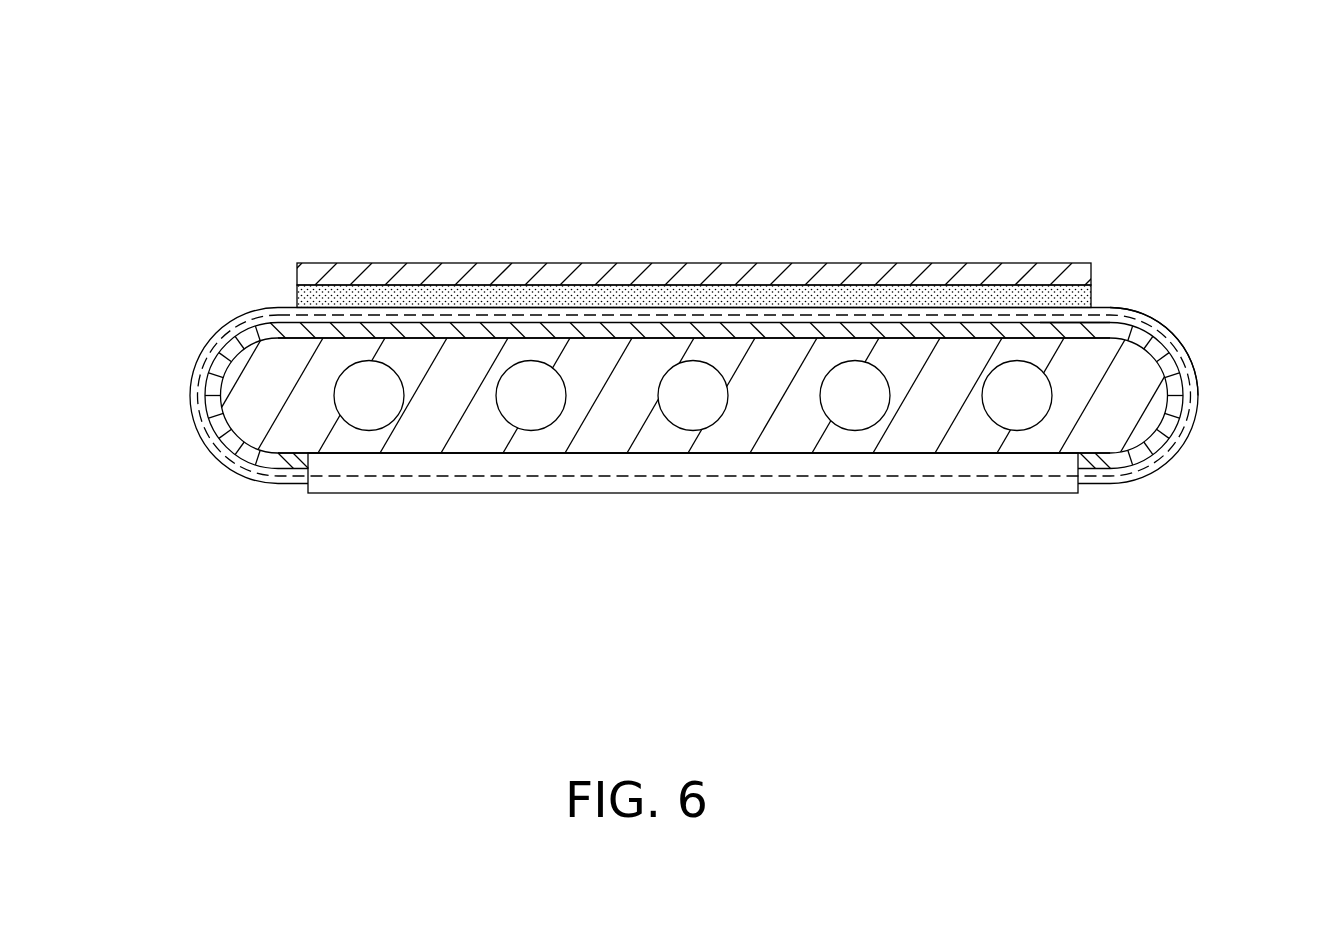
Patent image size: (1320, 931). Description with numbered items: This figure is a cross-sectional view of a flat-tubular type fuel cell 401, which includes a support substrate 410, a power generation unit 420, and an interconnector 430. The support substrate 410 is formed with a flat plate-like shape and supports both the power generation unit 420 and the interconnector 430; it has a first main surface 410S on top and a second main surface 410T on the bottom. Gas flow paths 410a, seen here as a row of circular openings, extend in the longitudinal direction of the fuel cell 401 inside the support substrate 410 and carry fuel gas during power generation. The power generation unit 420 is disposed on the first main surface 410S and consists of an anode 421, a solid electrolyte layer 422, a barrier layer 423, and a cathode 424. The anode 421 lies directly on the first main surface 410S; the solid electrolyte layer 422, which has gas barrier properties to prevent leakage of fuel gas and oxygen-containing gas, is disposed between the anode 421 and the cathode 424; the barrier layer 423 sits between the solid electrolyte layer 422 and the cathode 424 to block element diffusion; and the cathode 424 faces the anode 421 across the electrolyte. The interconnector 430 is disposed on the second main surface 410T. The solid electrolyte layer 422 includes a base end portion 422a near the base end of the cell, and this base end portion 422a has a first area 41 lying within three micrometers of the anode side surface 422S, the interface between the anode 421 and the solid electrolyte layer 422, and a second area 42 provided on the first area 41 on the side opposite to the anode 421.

The fuel cell 401 is at (222, 148).
The support substrate 410 is at (691, 386).
The gas flow paths 410a is at (532, 401).
The first main surface 410S is at (352, 333).
The second main surface 410T is at (916, 458).
The power generation unit 420 is at (694, 265).
The anode 421 is at (693, 330).
The solid electrolyte layer 422 is at (694, 265).
The base end portion 422a is at (694, 279).
The anode side surface 422S is at (1076, 320).
The barrier layer 423 is at (842, 296).
The cathode 424 is at (951, 276).
The interconnector 430 is at (731, 465).
The first area 41 is at (1148, 310).
The second area 42 is at (1187, 348).